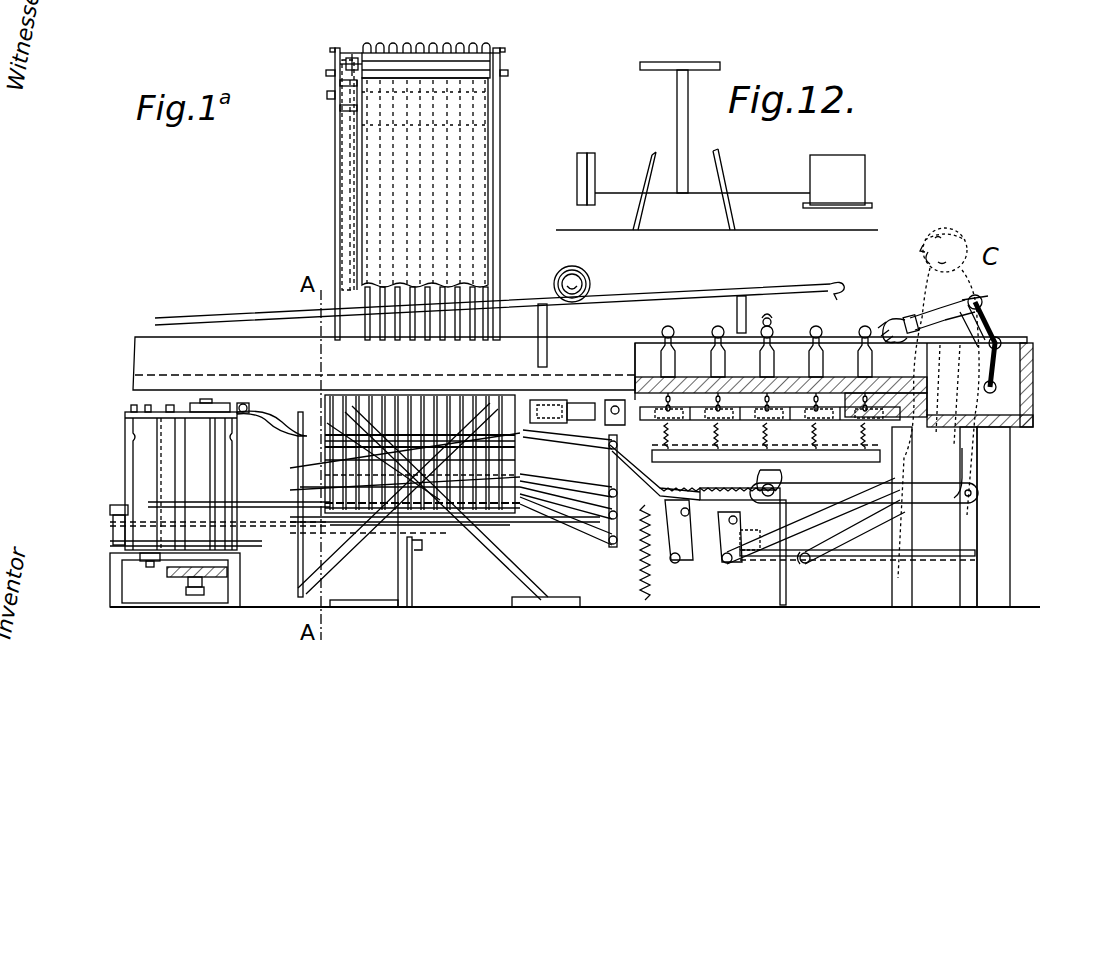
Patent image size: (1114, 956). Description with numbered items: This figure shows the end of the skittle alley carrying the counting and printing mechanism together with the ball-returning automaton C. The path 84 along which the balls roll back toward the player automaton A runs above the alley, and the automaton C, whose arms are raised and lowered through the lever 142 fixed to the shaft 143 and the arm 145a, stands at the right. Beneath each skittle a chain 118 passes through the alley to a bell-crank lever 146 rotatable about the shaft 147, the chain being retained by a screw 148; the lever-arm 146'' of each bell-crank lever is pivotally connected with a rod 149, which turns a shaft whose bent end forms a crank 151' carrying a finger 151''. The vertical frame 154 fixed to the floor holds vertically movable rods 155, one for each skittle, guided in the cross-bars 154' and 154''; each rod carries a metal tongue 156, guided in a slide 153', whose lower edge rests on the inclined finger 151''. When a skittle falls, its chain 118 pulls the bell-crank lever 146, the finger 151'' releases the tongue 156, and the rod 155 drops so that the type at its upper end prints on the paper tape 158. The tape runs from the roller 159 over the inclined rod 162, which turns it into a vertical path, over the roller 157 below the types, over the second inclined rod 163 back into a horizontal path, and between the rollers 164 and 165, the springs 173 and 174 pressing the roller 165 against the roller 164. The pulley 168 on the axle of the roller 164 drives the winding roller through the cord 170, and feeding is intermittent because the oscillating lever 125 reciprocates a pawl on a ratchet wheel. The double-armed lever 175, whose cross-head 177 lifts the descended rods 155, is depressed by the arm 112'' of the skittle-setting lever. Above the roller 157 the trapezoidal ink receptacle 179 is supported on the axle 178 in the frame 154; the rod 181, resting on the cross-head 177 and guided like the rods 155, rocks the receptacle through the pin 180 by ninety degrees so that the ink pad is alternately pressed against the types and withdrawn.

In FIG. 1A, the vertical frame 154 is at (440, 194).
In FIG. 1A, the cross-bar 154' is at (313, 110).
In FIG. 1A, the cross-bar 154'' is at (389, 487).
In FIG. 1A, the roller 157 is at (326, 95).
In FIG. 12, the roller 157 is at (670, 70).
In FIG. 1A, the strip of paper (tape) 158 is at (382, 170).
In FIG. 12, the strip of paper (tape) 158 is at (677, 120).
In FIG. 1A, the roller 159 is at (575, 517).
In FIG. 12, the roller 159 is at (850, 172).
In FIG. 12, the rod 162 is at (725, 207).
In FIG. 1A, the rod 163 is at (318, 582).
In FIG. 12, the rod 163 is at (650, 215).
In FIG. 1A, the roller 164 is at (210, 452).
In FIG. 12, the roller 164 is at (593, 173).
In FIG. 1A, the roller 165 is at (170, 452).
In FIG. 12, the roller 165 is at (580, 173).
In FIG. 1A, the pulley 168 is at (180, 577).
In FIG. 1A, the cord 170 is at (218, 577).
In FIG. 1A, the spring 173 is at (158, 412).
In FIG. 1A, the spring 174 is at (158, 566).
In FIG. 1A, the double-armed lever 175 is at (415, 545).
In FIG. 1A, the cross-head 177 is at (390, 530).
In FIG. 1A, the axle 178 is at (500, 56).
In FIG. 1A, the ink-fountain (receptacle) 179 is at (378, 60).
In FIG. 1A, the pin 180 is at (346, 66).
In FIG. 1A, the rod 181 is at (355, 210).
In FIG. 1A, the vertically movable rods 155 is at (467, 318).
In FIG. 1A, the path 84 is at (690, 304).
In FIG. 1A, the chain 118 is at (645, 400).
In FIG. 1A, the screws 148 is at (780, 410).
In FIG. 1A, the bell-crank lever 146 is at (751, 442).
In FIG. 1A, the lever-arm 146'' is at (562, 386).
In FIG. 1A, the shaft 147 is at (615, 405).
In FIG. 1A, the rods 149 is at (580, 480).
In FIG. 1A, the crank 151' is at (501, 419).
In FIG. 1A, the finger 151'' is at (488, 522).
In FIG. 1A, the slide 153' is at (437, 518).
In FIG. 1A, the metal tongue 156 is at (330, 462).
In FIG. 1A, the arm of double-armed lever 112'' is at (220, 540).
In FIG. 1A, the lever 125 is at (660, 520).
In FIG. 1A, the lever 142 is at (985, 298).
In FIG. 1A, the shaft 143 is at (1000, 320).
In FIG. 1A, the hand / finger 145a is at (912, 296).